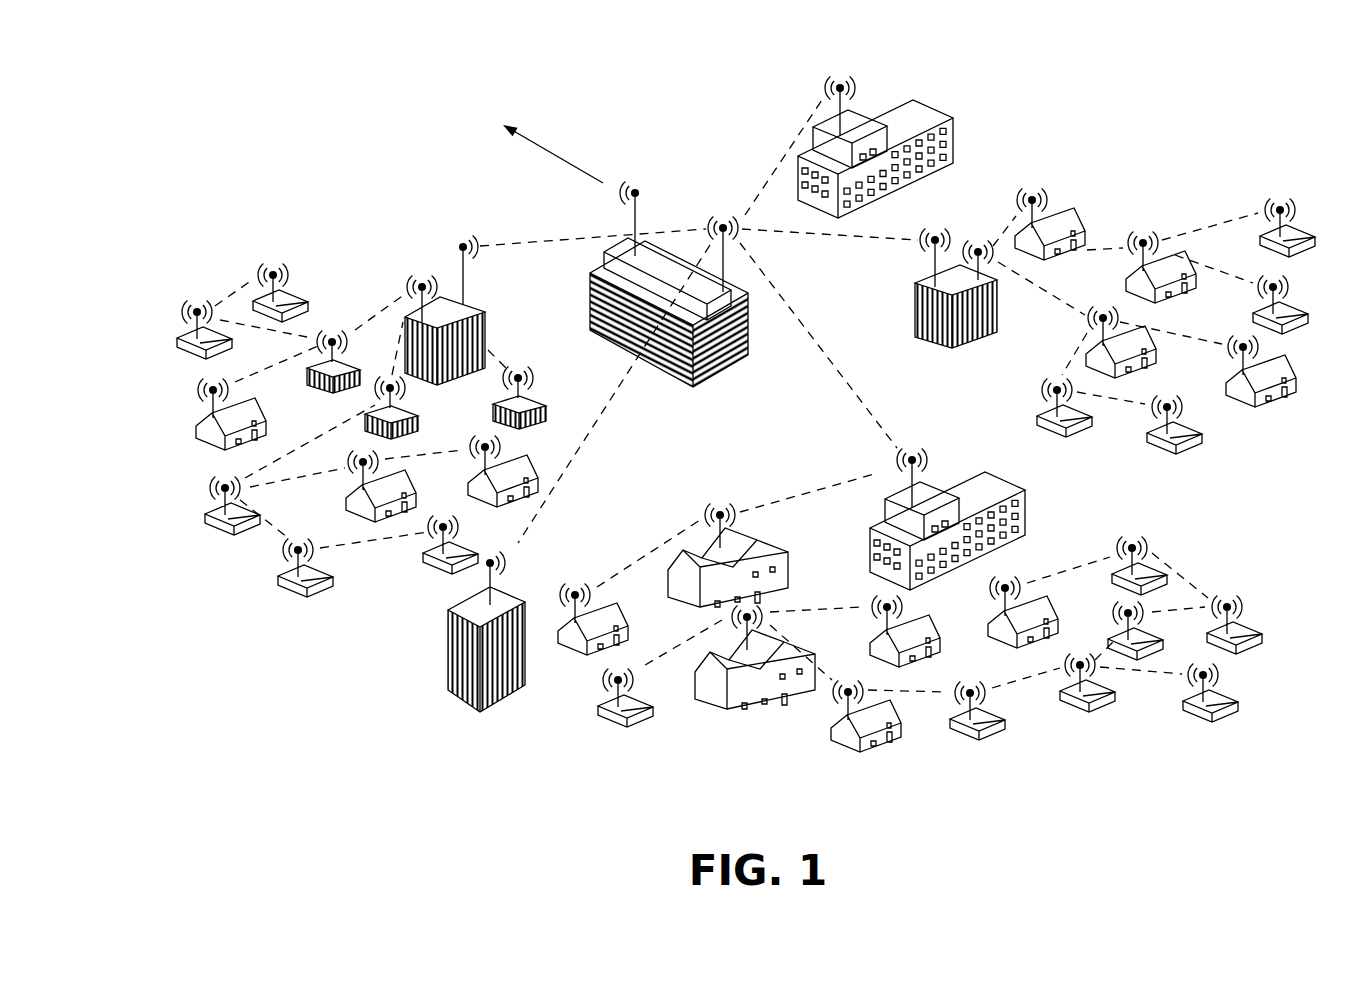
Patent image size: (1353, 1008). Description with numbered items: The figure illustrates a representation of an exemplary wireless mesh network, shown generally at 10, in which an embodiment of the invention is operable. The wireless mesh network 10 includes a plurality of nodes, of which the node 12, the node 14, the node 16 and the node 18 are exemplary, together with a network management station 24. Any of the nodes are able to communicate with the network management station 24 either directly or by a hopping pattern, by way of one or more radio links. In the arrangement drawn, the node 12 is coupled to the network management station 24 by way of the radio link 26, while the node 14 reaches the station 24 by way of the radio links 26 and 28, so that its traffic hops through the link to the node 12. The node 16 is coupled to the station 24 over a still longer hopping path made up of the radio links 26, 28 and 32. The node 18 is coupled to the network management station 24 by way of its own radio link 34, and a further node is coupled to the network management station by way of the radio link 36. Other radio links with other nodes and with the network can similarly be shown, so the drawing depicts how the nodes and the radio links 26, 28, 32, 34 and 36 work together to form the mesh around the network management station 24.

The wireless mesh network 10 is at (318, 114).
The node 12 is at (913, 478).
The node 14 is at (720, 548).
The node 16 is at (576, 596).
The node 18 is at (448, 646).
The network management station 24 is at (588, 298).
The radio link 26 is at (830, 357).
The radio link 28 is at (808, 493).
The radio link 32 is at (663, 545).
The radio link 34 is at (462, 268).
The radio link 36 is at (532, 238).